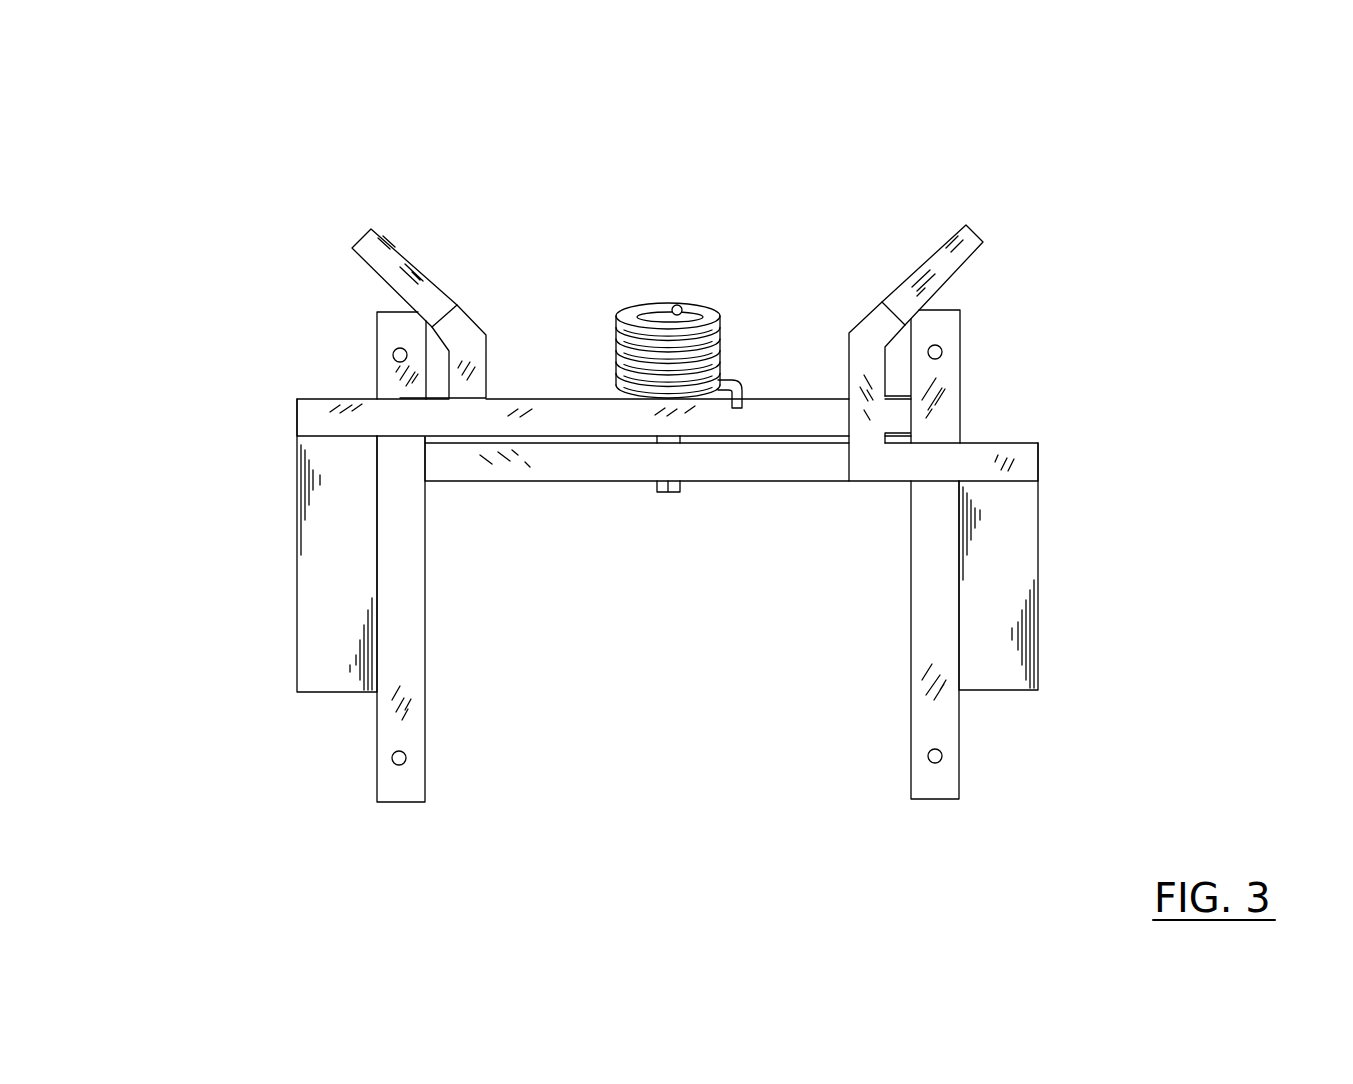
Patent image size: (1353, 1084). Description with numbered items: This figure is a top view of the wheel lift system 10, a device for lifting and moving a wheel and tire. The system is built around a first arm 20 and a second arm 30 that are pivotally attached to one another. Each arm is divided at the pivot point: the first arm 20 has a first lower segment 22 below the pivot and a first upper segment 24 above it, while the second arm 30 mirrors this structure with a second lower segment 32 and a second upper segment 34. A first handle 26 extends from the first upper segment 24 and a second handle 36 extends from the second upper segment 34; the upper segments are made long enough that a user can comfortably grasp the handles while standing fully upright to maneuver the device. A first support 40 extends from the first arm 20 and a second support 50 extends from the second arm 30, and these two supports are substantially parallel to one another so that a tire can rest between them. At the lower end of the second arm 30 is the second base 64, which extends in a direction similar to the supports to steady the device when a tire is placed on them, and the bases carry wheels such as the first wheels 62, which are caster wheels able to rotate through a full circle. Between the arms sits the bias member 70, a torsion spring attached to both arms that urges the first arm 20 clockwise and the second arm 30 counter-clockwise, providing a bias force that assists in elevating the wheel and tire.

The wheel lift system 10 is at (1152, 192).
The first arm 20 is at (590, 382).
The first lower segment 22 is at (553, 397).
The first upper segment 24 is at (355, 397).
The first handle 26 is at (401, 255).
The second arm 30 is at (545, 500).
The second lower segment 32 is at (730, 482).
The second upper segment 34 is at (985, 441).
The second handle 36 is at (958, 232).
The first support 40 is at (297, 633).
The second support 50 is at (1038, 557).
The first wheels 62 is at (425, 773).
The second base 64 is at (911, 612).
The bias member 70 is at (663, 302).